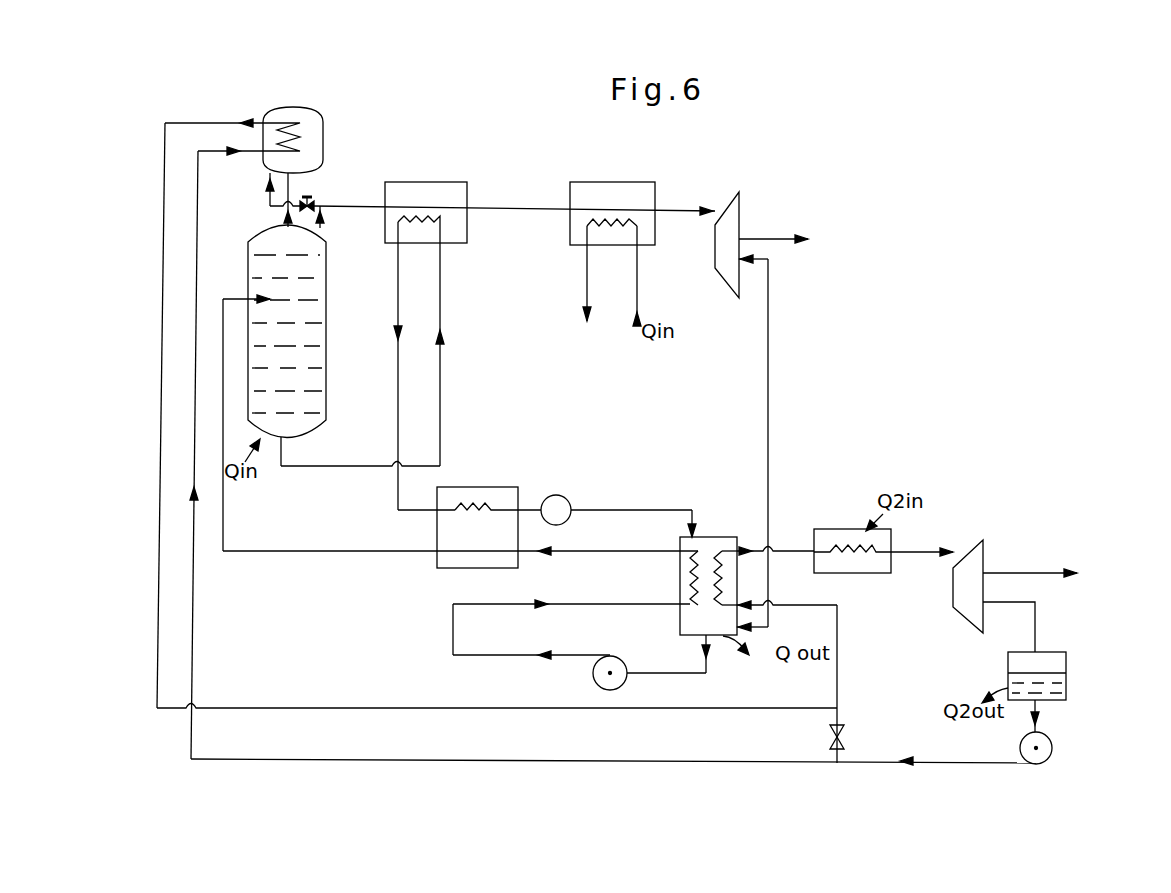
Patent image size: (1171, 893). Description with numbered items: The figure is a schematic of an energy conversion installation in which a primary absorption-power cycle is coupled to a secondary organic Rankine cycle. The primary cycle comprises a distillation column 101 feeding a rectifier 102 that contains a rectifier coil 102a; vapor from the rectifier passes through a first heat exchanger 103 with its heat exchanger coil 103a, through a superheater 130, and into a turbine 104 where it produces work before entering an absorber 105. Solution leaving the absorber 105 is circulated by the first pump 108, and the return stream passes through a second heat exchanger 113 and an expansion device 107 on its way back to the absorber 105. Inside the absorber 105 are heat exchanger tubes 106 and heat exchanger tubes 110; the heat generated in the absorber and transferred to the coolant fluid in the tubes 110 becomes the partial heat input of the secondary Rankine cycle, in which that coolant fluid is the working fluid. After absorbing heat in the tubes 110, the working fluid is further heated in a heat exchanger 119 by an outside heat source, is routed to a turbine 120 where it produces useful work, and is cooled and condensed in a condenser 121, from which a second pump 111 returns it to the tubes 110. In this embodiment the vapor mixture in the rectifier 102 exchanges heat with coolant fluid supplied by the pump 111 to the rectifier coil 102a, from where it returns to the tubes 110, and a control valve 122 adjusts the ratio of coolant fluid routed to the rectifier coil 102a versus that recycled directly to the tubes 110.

The distillation column 101 is at (327, 267).
The rectifier 102 is at (317, 130).
The rectifier coil 102a is at (278, 122).
The first heat exchanger 103 is at (418, 182).
The heat exchanger coil 103a is at (441, 225).
The turbine 104 is at (740, 200).
The absorber 105 is at (708, 537).
The absorber heat exchanger tube 106 is at (690, 571).
The expansion device 107 is at (563, 496).
The first pump 108 is at (594, 668).
The absorber heat exchanger tube 110 is at (722, 579).
The second pump 111 is at (1050, 741).
The second heat exchanger 113 is at (467, 487).
The heat exchanger 119 is at (840, 529).
The turbine 120 is at (961, 553).
The condenser 121 is at (1066, 657).
The control valve 122 is at (843, 743).
The superheater 130 is at (622, 182).